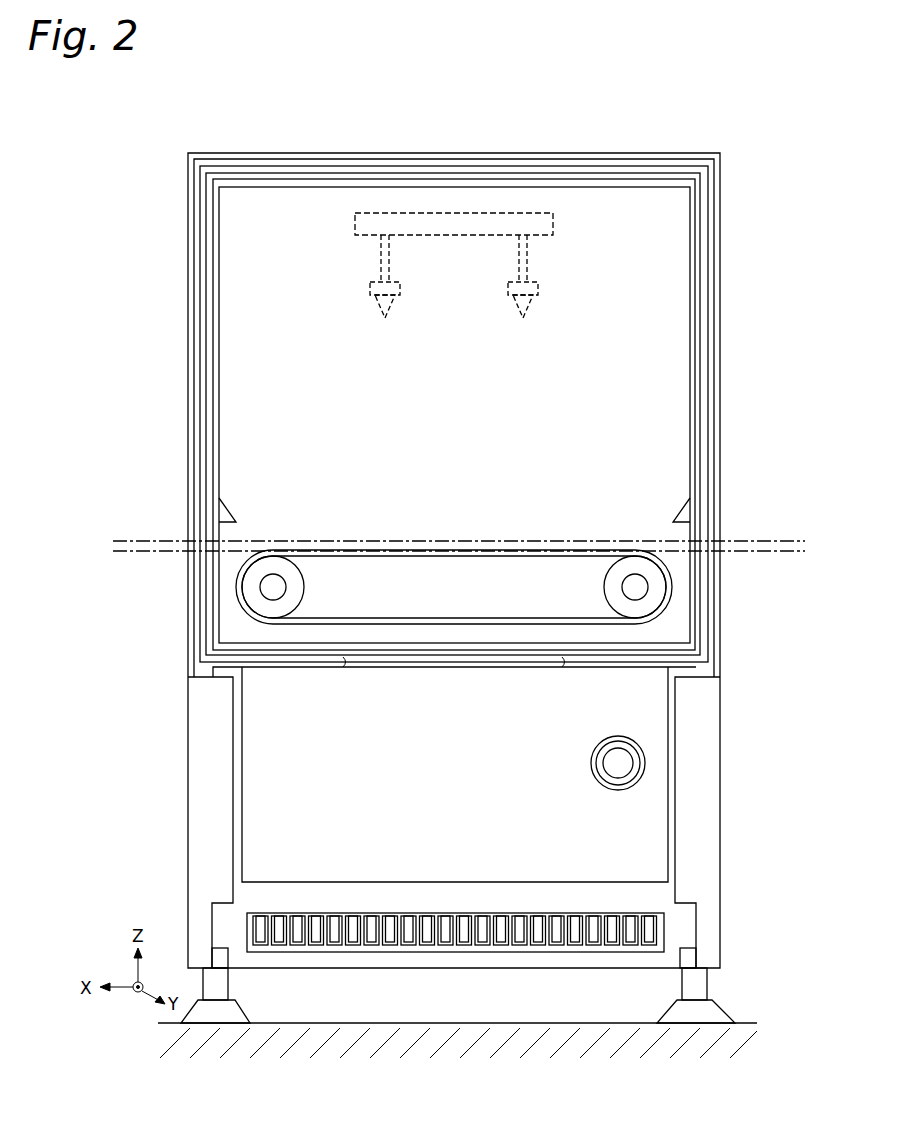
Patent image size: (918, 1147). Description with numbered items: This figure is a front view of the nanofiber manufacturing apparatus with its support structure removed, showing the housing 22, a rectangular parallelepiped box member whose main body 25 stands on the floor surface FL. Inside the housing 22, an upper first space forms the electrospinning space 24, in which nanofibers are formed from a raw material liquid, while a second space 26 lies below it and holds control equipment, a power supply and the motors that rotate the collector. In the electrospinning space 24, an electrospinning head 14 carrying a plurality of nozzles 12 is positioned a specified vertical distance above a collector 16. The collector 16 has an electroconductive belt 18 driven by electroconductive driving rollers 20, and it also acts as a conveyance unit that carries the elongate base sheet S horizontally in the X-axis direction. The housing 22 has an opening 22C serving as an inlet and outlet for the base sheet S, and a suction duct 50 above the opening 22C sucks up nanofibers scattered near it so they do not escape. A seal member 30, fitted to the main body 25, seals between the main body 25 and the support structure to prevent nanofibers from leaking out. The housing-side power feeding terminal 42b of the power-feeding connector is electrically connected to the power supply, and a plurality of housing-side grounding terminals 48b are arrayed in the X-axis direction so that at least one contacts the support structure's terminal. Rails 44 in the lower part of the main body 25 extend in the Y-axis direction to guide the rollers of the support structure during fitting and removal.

The nozzle 12 is at (376, 302).
The electrospinning head 14 is at (455, 248).
The collector 16 is at (454, 544).
The belt 18 is at (455, 553).
The driving roller 20 is at (305, 588).
The housing 22 is at (618, 153).
The opening 22C is at (188, 553).
The electrospinning space 24 is at (465, 417).
The main body 25 is at (677, 153).
The second space 26 is at (455, 919).
The seal member 30 is at (283, 173).
The housing-side power feeding terminal 42b is at (591, 764).
The rail 44 is at (228, 950).
The housing-side grounding terminal 48b is at (265, 913).
The suction duct 50 is at (236, 500).
The base sheet S is at (762, 541).
The floor surface FL is at (744, 1023).